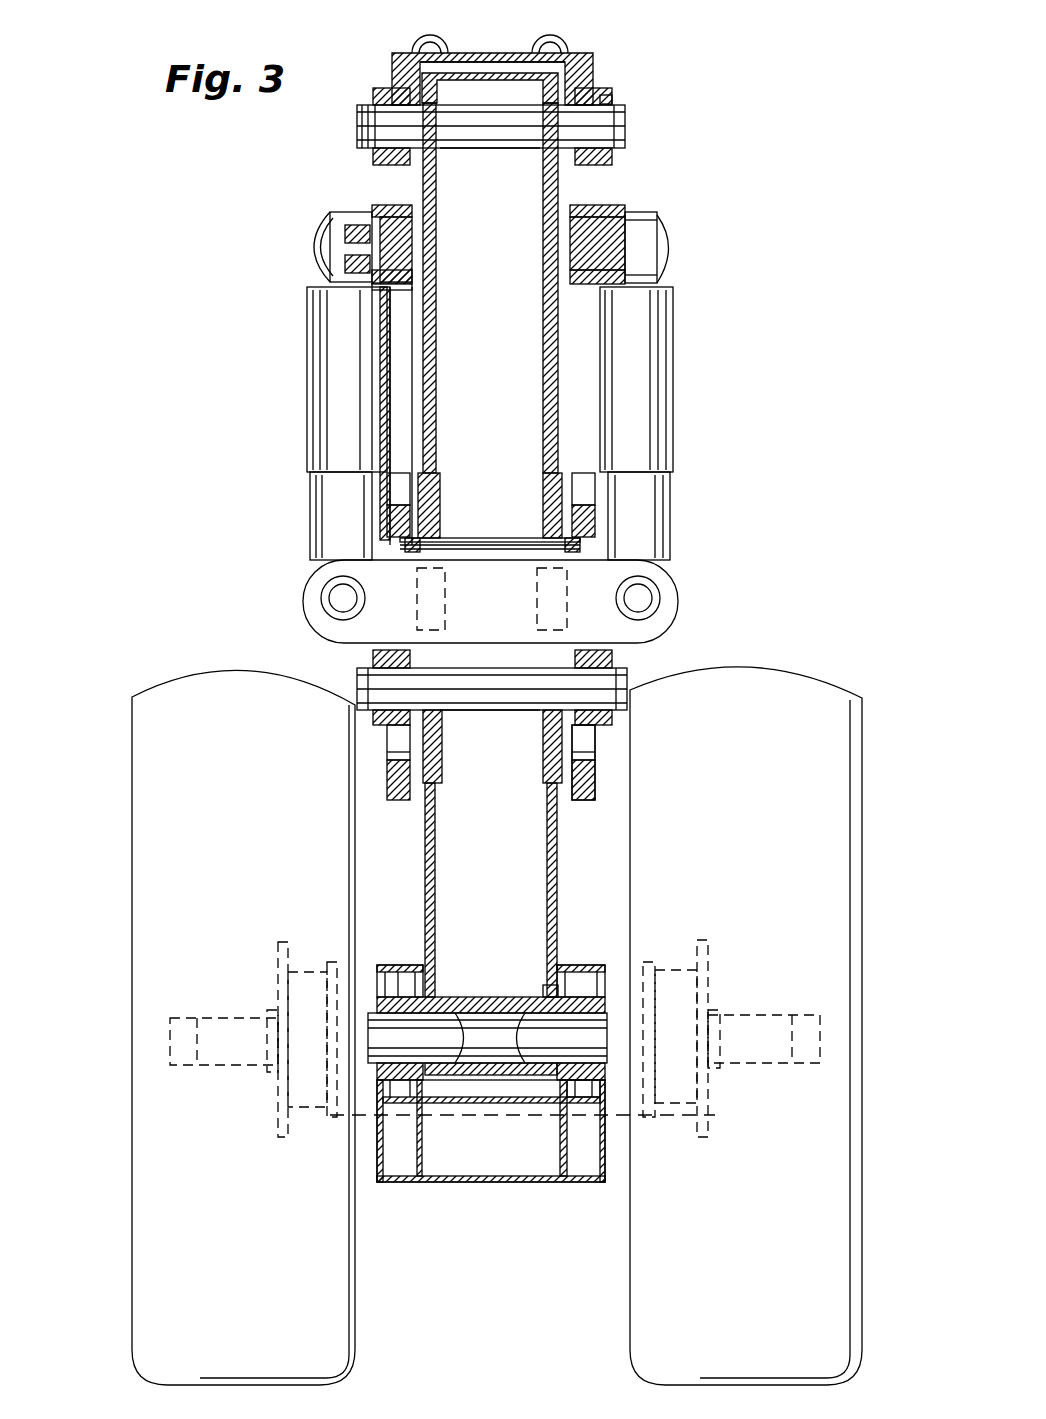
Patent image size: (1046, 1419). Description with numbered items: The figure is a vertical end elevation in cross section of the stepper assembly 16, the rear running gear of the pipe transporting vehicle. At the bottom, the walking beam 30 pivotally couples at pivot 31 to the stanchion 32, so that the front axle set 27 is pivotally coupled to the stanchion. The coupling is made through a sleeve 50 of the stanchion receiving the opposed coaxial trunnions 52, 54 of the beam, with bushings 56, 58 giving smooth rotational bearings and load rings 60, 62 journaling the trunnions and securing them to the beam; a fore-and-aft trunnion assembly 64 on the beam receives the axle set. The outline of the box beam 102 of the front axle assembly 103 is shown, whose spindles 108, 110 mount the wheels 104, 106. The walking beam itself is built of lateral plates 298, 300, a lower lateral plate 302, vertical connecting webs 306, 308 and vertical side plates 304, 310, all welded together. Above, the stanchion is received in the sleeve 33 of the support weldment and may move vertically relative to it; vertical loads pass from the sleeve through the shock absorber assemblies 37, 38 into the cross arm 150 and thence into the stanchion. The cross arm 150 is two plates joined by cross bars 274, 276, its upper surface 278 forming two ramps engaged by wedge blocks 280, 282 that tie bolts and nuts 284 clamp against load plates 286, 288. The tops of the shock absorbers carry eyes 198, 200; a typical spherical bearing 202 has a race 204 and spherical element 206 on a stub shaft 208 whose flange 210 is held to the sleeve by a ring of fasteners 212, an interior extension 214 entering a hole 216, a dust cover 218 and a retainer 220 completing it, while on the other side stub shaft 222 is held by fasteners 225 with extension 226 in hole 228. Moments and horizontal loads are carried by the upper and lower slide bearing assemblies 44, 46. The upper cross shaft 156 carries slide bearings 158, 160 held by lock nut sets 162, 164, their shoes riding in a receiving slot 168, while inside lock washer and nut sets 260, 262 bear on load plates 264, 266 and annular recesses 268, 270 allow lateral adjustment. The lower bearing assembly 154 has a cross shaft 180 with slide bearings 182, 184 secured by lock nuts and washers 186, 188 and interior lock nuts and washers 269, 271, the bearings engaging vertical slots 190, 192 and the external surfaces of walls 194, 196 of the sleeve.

The stepper assembly 16 is at (700, 118).
The front axle set 27 is at (170, 852).
The walking beam 30 is at (400, 1188).
The pivot 31 is at (612, 1045).
The stanchion 32 is at (562, 862).
The sleeve 33 is at (593, 60).
The shock absorber assembly 37 is at (315, 407).
The shock absorber assembly 38 is at (665, 375).
The upper slide bearing assembly 44 is at (612, 102).
The lower slide bearing assembly 46 is at (630, 658).
The sleeve 50 is at (528, 1000).
The trunnion 52 is at (440, 1015).
The trunnion 54 is at (600, 1038).
The bushing 56 is at (455, 1030).
The bushing 58 is at (558, 985).
The load ring 60 is at (600, 965).
The load ring 62 is at (388, 965).
The trunnion assembly 64 is at (505, 995).
The box beam 102 is at (620, 1095).
The front axle assembly 103 is at (333, 1118).
The wheel 104 is at (132, 1302).
The wheel 106 is at (650, 1260).
The spindle 108 is at (225, 1022).
The spindle 110 is at (780, 1022).
The cross arm 150 is at (660, 595).
The lower bearing assembly 154 is at (598, 722).
The cross shaft 156 is at (515, 150).
The slide bearing 158 is at (385, 95).
The slide bearing 160 is at (612, 165).
The lock nut and bolt set 162 is at (373, 158).
The lock nut and bolt set 164 is at (612, 152).
The receiving slot 168 is at (436, 190).
The cross shaft 180 is at (505, 700).
The slide bearing 182 is at (373, 718).
The slide bearing 184 is at (612, 661).
The lock nut and washer 186 is at (375, 665).
The lock nut and washer 188 is at (612, 716).
The vertical slot 190 is at (387, 740).
The vertical slot 192 is at (595, 742).
The wall 194 is at (387, 782).
The wall 196 is at (595, 785).
The eye 198 is at (340, 215).
The eye 200 is at (650, 215).
The spherical bearing 202 is at (305, 252).
The race 204 is at (345, 232).
The spherical element 206 is at (375, 286).
The stub shaft 208 is at (395, 292).
The flange 210 is at (383, 300).
The ring of fasteners 212 is at (378, 208).
The interior extension 214 is at (412, 237).
The hole 216 is at (412, 270).
The dust cover 218 is at (305, 247).
The retainer 220 is at (348, 265).
The stub shaft 222 is at (670, 245).
The ring of fasteners 225 is at (640, 280).
The extension 226 is at (610, 210).
The hole 228 is at (600, 228).
The lock washer and nut set 260 is at (418, 100).
The lock washer and nut set 262 is at (560, 55).
The load plate 264 is at (440, 62).
The load plate 266 is at (545, 90).
The annular recess 268 is at (372, 140).
The interior lock nut and washer 269 is at (442, 740).
The annular recess 270 is at (606, 95).
The interior lock nut and washer 271 is at (543, 745).
The cross bar 274 is at (445, 592).
The cross bar 276 is at (537, 604).
The upper surface 278 is at (565, 546).
The wedge block 280 is at (430, 540).
The wedge block 282 is at (553, 480).
The tie bolts and nuts 284 is at (597, 515).
The load plate 286 is at (440, 490).
The load plate 288 is at (598, 470).
The lateral plate 298 is at (512, 1103).
The lateral plate 300 is at (400, 970).
The lower lateral plate 302 is at (462, 1182).
The vertical side plate 304 is at (378, 1160).
The connecting web 306 is at (422, 1147).
The connecting web 308 is at (560, 1160).
The vertical side plate 310 is at (605, 1160).